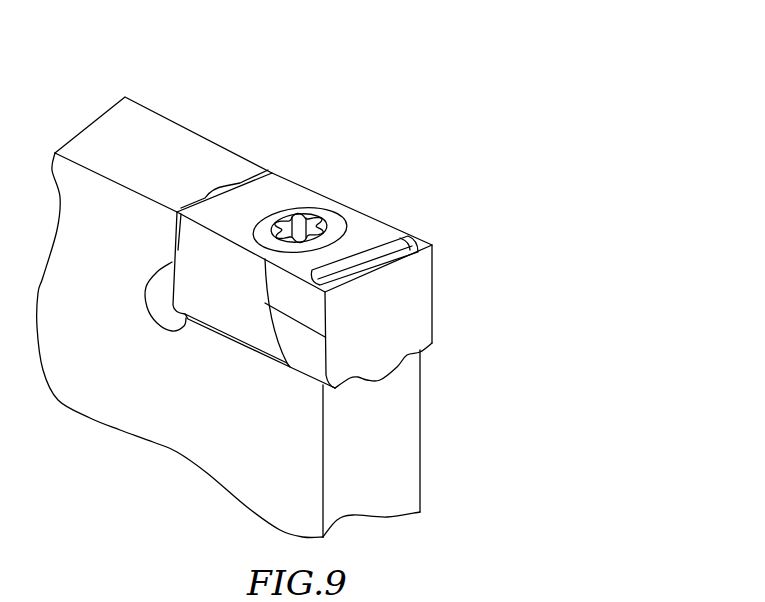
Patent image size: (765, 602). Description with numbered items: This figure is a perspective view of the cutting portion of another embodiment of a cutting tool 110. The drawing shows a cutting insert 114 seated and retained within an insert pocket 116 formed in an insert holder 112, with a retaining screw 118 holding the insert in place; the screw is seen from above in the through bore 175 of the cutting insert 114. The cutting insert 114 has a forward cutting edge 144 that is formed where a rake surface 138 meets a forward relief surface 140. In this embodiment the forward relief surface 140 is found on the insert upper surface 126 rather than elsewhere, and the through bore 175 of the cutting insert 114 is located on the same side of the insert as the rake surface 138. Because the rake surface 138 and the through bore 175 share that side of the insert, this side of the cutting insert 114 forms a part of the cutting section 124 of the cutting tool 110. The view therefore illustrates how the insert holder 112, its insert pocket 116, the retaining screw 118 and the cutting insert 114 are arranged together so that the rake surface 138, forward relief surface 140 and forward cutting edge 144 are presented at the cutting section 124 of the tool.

The cutting tool 110 is at (418, 105).
The insert holder 112 is at (163, 163).
The cutting insert 114 is at (282, 198).
The insert pocket 116 is at (167, 312).
The retaining screw 118 is at (333, 228).
The cutting section 124 is at (280, 123).
The insert upper surface 126 is at (383, 330).
The rake surface 138 is at (402, 234).
The forward relief surface 140 is at (400, 278).
The forward cutting edge 144 is at (423, 250).
The through bore 175 is at (310, 207).